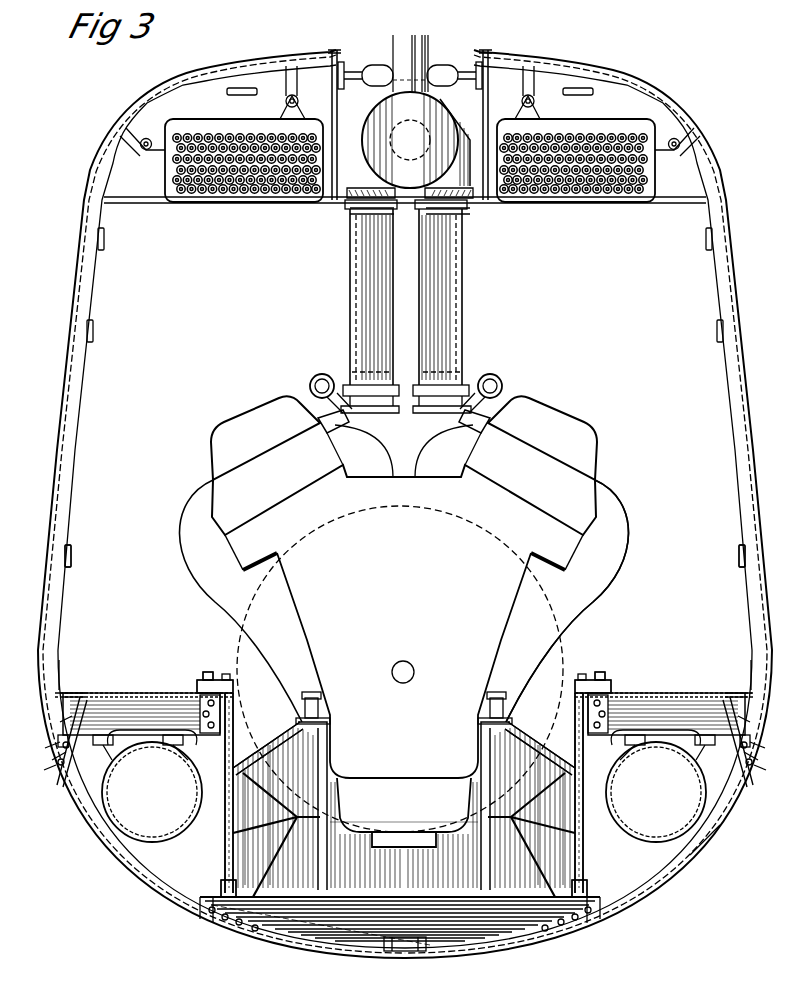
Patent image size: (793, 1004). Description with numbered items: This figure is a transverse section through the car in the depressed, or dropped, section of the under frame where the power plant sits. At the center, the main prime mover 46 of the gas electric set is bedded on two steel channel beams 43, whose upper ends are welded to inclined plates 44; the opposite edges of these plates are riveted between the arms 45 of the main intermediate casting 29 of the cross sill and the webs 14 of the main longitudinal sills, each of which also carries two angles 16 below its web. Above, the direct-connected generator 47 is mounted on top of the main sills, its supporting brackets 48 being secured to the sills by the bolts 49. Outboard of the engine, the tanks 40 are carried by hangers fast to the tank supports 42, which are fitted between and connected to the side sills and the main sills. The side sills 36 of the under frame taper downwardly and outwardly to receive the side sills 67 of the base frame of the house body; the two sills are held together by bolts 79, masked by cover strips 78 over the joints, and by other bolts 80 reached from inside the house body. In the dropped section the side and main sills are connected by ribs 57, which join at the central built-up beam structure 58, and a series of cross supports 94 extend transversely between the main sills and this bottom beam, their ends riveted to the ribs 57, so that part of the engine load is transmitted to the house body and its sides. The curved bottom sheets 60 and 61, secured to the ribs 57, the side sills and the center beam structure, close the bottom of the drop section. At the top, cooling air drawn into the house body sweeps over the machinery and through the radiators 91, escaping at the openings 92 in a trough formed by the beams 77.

The web 14 is at (225, 826).
The angles 16 is at (234, 882).
The main intermediate casting 29 is at (404, 830).
The side sills 36 is at (80, 697).
The tanks 40 is at (108, 793).
The tank supports 42 is at (648, 697).
The channel beams 43 is at (328, 750).
The inclined plates 44 is at (272, 748).
The arms 45 is at (265, 788).
The main prime mover 46 is at (403, 523).
The generator 47 is at (560, 650).
The supporting brackets 48 is at (210, 672).
The bolts 49 is at (202, 680).
The ribs 57 is at (168, 895).
The built-up beam structure 58 is at (384, 952).
The curved bottom sheet 60 is at (172, 896).
The curved bottom sheet 61 is at (676, 878).
The side sills 67 is at (62, 690).
The beams 77 is at (343, 150).
The strips 78 is at (48, 772).
The bolts 79 is at (48, 750).
The bolts 80 is at (92, 697).
The radiators 91 is at (245, 128).
The openings 92 is at (366, 74).
The cross supports 94 is at (428, 918).